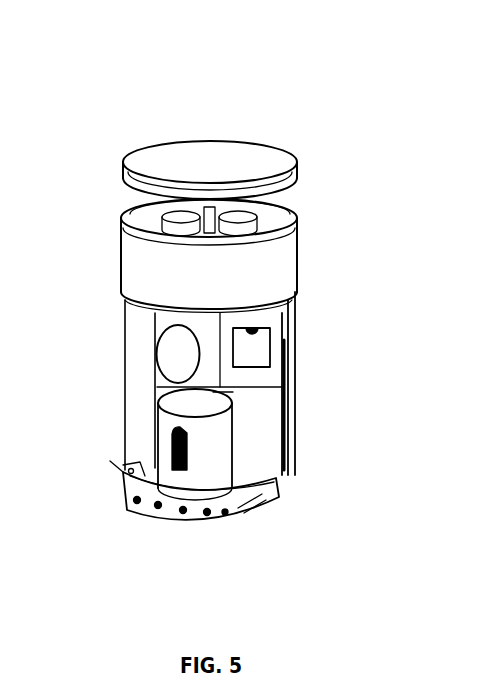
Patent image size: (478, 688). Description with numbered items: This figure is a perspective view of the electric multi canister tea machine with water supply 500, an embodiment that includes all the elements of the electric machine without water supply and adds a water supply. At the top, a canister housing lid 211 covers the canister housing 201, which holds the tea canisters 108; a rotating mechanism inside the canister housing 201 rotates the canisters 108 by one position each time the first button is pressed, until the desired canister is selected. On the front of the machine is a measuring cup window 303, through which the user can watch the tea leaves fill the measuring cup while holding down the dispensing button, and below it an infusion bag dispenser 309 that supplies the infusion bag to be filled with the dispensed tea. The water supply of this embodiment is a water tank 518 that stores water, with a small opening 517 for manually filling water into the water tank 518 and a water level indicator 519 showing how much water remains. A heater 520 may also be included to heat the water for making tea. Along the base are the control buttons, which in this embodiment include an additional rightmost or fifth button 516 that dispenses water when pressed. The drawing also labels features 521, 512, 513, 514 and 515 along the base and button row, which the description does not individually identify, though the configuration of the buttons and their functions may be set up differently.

The multiple tea canister electric tea machine with water supply 500 is at (98, 140).
The canister housing lid 211 is at (279, 150).
The canisters 108 is at (291, 211).
The canister housing 201 is at (298, 282).
The heater 520 is at (296, 305).
The small opening 517 is at (292, 326).
The water level indicator 519 is at (254, 338).
The water tank 518 is at (138, 324).
The measuring cup window 303 is at (173, 357).
The infusion bag dispenser 309 is at (284, 435).
The pin 521 is at (126, 478).
The base 512 is at (125, 497).
The indicator light 513 is at (140, 512).
The indicator light 514 is at (173, 527).
The indicator light 515 is at (210, 527).
The fifth button 516 is at (237, 520).